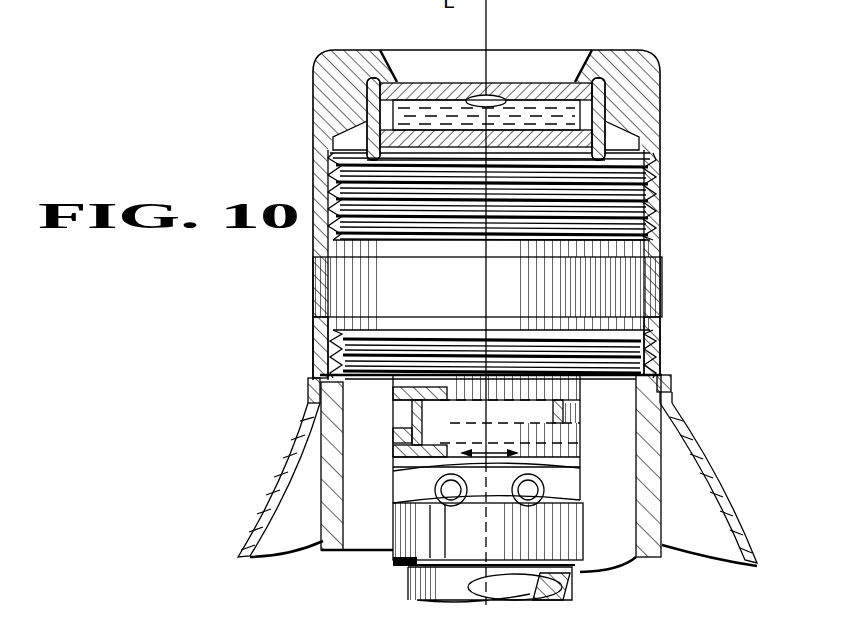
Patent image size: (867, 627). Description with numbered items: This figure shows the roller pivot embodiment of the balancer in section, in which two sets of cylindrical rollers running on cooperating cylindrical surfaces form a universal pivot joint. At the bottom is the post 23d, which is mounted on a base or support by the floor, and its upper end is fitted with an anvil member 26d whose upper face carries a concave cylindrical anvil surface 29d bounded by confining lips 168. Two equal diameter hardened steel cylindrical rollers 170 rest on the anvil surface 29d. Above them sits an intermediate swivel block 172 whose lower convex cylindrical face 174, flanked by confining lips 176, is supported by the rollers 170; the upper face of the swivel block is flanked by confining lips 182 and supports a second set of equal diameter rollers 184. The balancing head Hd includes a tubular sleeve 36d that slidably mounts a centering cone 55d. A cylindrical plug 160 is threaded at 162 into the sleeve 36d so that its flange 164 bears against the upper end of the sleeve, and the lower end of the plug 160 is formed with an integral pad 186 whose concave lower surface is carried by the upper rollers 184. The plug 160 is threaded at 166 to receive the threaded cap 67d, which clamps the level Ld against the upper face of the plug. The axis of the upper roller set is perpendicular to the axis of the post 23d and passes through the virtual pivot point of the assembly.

The balancing head Hd is at (678, 94).
The level Ld is at (505, 85).
The threaded cap 67d is at (655, 121).
The threads 166 is at (650, 176).
The cylindrical plug 160 is at (649, 244).
The flange 164 is at (650, 281).
The threads 162 is at (641, 346).
The tubular sleeve 36d is at (653, 363).
The integral pad 186 is at (658, 389).
The cylindrical anvil surface 29d is at (569, 500).
The rollers 184 is at (393, 412).
The confining lips 182 is at (393, 430).
The confining lips 176 is at (583, 468).
The intermediate swivel block 172 is at (380, 457).
The convex cylindrical face 174 is at (406, 470).
The cylindrical rollers 170 is at (512, 506).
The confining lips 168 is at (576, 501).
The anvil member 26d is at (394, 555).
The post 23d is at (410, 583).
The centering cone 55d is at (719, 469).